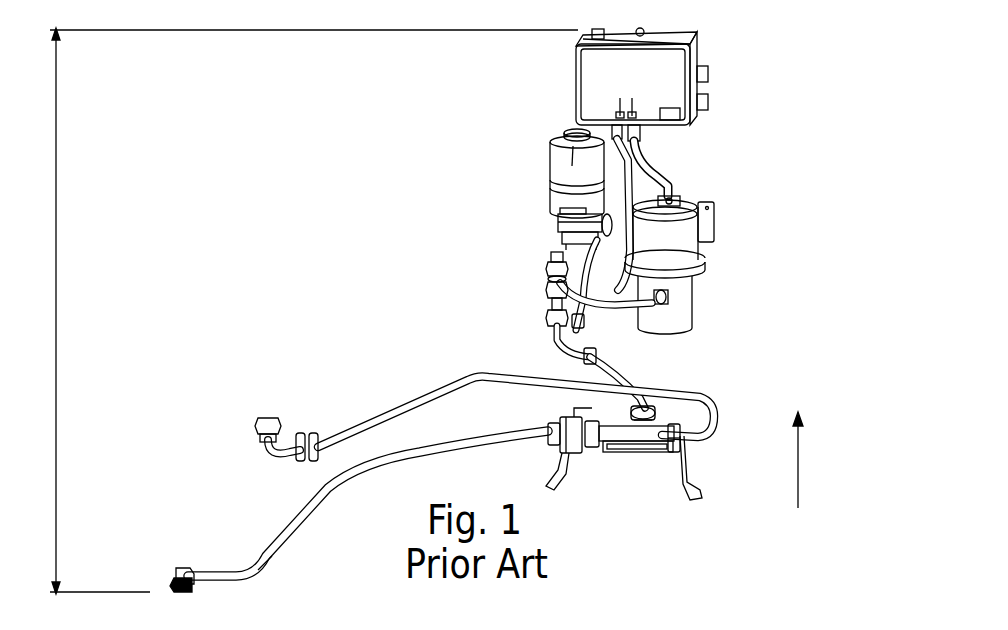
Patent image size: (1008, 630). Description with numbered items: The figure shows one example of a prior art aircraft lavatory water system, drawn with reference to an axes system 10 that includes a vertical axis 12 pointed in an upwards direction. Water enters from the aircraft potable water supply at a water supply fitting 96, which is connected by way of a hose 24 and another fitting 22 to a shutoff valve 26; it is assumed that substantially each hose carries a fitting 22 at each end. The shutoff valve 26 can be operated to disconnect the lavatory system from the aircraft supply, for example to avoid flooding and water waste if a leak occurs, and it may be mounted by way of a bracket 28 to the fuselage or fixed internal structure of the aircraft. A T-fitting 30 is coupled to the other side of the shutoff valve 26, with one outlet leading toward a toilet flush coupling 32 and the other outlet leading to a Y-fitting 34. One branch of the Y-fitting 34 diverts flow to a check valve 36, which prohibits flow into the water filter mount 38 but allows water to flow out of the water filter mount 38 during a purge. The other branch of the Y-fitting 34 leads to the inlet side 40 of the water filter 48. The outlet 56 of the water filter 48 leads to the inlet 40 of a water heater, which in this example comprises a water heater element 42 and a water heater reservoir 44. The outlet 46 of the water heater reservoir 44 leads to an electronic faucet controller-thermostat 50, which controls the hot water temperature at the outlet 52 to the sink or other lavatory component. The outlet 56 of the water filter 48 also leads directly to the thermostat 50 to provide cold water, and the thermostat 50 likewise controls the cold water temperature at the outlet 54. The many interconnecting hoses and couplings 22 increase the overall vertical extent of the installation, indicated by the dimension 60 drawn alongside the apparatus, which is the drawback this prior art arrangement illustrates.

The axes system 10 is at (816, 441).
The vertical axis 12 is at (797, 462).
The fitting 22 is at (312, 433).
The hose 24 is at (355, 482).
The shutoff valve 26 is at (575, 456).
The bracket 28 is at (668, 462).
The T-fitting 30 is at (650, 412).
The toilet flush coupling 32 is at (271, 418).
The Y-fitting 34 is at (557, 338).
The check valve 36 is at (548, 300).
The water filter mount 38 is at (560, 226).
The inlet 40 is at (560, 255).
The water heater element 42 is at (745, 330).
The water heater reservoir 44 is at (680, 243).
The outlet of the water heater reservoir 46 is at (672, 212).
The water filter 48 is at (550, 136).
The electronic faucet controller-thermostat 50 is at (575, 78).
The hot water outlet 52 is at (709, 72).
The cold water outlet 54 is at (709, 104).
The outlet of the water filter 56 is at (582, 218).
The dimension 60 is at (58, 262).
The water supply fitting 96 is at (178, 568).